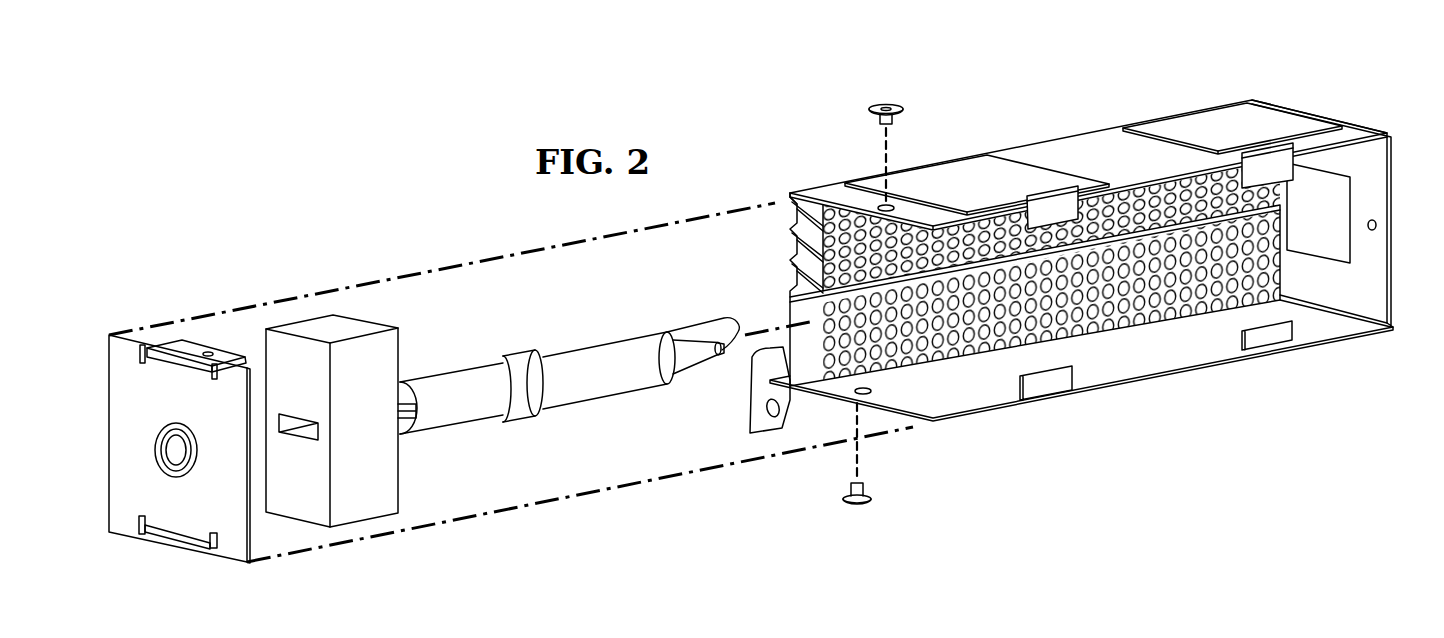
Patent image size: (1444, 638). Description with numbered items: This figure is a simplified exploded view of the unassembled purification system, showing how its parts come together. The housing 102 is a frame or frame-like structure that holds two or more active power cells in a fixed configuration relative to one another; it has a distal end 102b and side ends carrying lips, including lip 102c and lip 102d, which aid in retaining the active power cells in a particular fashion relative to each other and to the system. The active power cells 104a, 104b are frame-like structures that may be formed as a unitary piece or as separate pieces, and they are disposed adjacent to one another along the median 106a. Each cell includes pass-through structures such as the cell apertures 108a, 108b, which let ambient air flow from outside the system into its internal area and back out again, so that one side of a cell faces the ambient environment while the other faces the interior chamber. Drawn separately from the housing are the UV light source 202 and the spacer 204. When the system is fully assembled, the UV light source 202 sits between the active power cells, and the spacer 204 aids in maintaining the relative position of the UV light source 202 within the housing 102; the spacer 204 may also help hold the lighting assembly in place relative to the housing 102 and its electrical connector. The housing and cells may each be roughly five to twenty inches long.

The housing 102 is at (1103, 251).
The distal end 102b is at (1392, 157).
The lip 102c is at (1045, 213).
The lip 102d is at (1055, 398).
The active power cell 104a is at (790, 197).
The active power cell 104b is at (757, 352).
The median 106a is at (790, 297).
The cell aperture 108a is at (838, 243).
The cell aperture 108b is at (953, 358).
The UV light source 202 is at (598, 397).
The spacer 204 is at (398, 463).